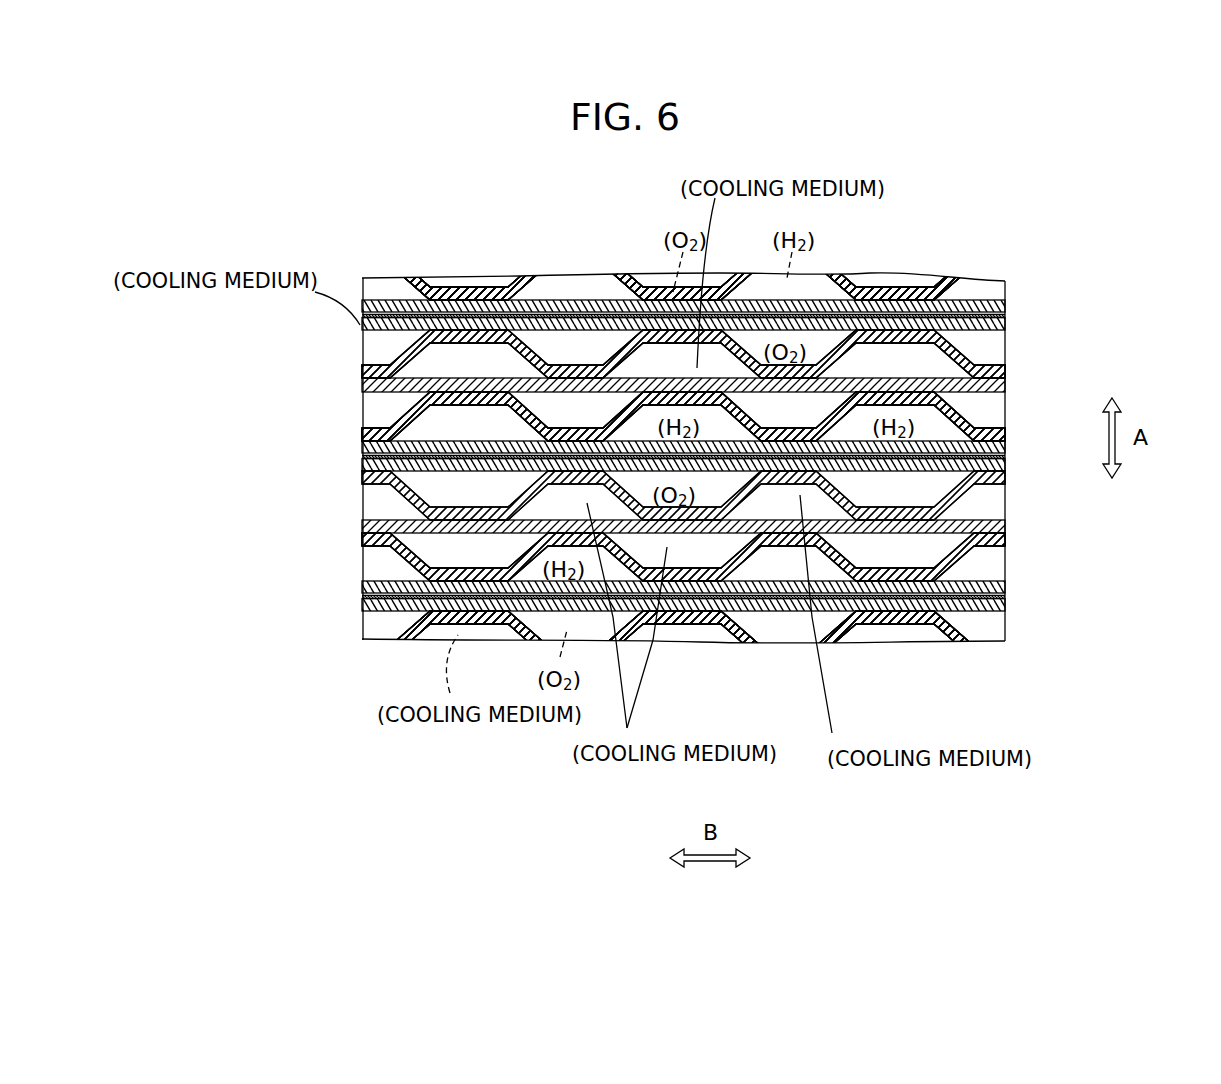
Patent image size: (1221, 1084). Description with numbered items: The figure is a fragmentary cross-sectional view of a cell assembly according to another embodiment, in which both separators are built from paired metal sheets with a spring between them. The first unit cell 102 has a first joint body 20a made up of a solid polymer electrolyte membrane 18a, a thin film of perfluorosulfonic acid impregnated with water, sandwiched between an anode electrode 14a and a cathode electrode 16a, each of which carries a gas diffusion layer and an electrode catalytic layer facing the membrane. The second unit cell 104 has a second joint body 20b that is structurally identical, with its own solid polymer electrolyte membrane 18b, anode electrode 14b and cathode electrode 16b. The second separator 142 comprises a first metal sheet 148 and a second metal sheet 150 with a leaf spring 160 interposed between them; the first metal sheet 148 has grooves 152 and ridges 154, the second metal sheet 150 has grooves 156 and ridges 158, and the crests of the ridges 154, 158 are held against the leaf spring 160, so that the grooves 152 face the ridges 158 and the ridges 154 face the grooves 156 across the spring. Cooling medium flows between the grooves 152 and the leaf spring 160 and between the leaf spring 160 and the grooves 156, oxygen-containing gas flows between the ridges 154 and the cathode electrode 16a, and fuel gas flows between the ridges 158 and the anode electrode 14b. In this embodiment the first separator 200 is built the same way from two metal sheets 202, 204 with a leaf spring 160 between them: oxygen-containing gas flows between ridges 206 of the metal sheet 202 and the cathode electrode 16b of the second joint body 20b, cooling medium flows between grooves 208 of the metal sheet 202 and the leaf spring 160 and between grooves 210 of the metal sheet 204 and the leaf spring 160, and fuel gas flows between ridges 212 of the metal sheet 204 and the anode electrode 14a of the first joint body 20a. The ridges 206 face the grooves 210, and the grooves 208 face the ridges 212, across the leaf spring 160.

The first unit cell 102 is at (1055, 447).
The second unit cell 104 is at (338, 328).
The second separator 142 is at (645, 228).
The first metal sheet 148 is at (527, 370).
The second metal sheet 150 is at (578, 377).
The grooves 152 is at (440, 300).
The ridges 154 is at (853, 290).
The grooves 156 is at (585, 417).
The ridges 158 is at (483, 403).
The leaf spring 160 is at (902, 387).
The first separator 200 is at (280, 550).
The metal sheet 202 is at (390, 483).
The metal sheet 204 is at (393, 559).
The ridges 206 is at (487, 512).
The grooves 208 is at (800, 472).
The grooves 210 is at (457, 555).
The ridges 212 is at (797, 540).
The anode electrode 14a is at (897, 282).
The cathode electrode 16a is at (1002, 280).
The solid polymer electrolyte membrane 18a is at (957, 282).
The first joint body 20a is at (1027, 228).
The anode electrode 14b is at (880, 616).
The cathode electrode 16b is at (980, 617).
The solid polymer electrolyte membrane 18b is at (937, 617).
The second joint body 20b is at (1013, 678).